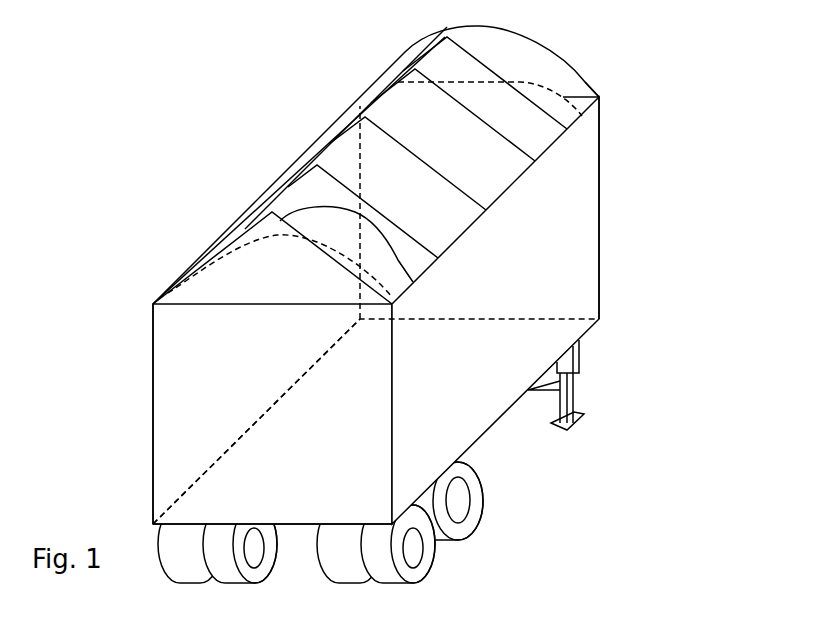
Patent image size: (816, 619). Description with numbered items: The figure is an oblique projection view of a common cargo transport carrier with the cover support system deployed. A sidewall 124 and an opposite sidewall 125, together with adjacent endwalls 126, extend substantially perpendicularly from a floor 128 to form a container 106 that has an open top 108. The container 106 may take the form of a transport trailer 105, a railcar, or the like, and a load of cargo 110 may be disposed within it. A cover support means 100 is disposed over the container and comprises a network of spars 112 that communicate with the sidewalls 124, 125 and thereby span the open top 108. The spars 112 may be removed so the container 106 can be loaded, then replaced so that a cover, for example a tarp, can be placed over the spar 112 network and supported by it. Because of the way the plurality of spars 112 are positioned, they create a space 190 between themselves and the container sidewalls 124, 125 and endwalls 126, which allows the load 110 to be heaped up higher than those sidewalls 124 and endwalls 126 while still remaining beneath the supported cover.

The cover support means 100 is at (232, 238).
The transport trailer 105 is at (153, 361).
The container 106 is at (598, 232).
The open top 108 is at (226, 288).
The load of cargo 110 is at (205, 280).
The spars 112 is at (287, 190).
The sidewall 124 is at (153, 422).
The opposite sidewall 125 is at (480, 393).
The endwalls 126 is at (193, 465).
The floor 128 is at (374, 480).
The space 190 is at (413, 282).